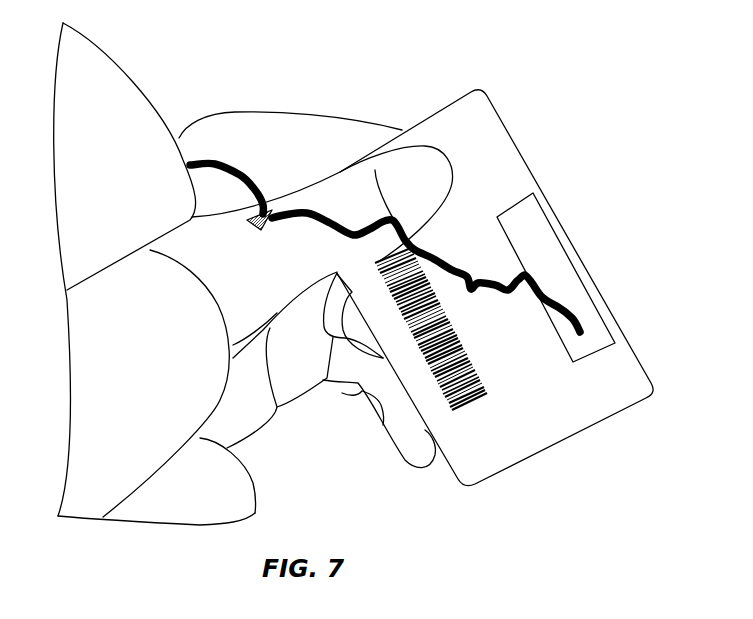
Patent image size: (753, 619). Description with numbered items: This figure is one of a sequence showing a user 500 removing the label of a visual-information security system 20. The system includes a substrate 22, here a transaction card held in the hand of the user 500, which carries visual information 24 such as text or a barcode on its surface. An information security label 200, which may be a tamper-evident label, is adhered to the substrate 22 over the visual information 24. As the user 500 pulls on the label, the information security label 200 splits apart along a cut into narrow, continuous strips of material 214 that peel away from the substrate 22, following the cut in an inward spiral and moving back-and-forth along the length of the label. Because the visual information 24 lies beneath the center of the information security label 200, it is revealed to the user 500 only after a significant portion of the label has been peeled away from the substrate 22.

The visual-information security system 20 is at (503, 256).
The substrate 22 is at (483, 97).
The visual information 24 is at (557, 255).
The information security label 200 is at (590, 327).
The strips of material 214 is at (498, 293).
The user 500 is at (340, 192).